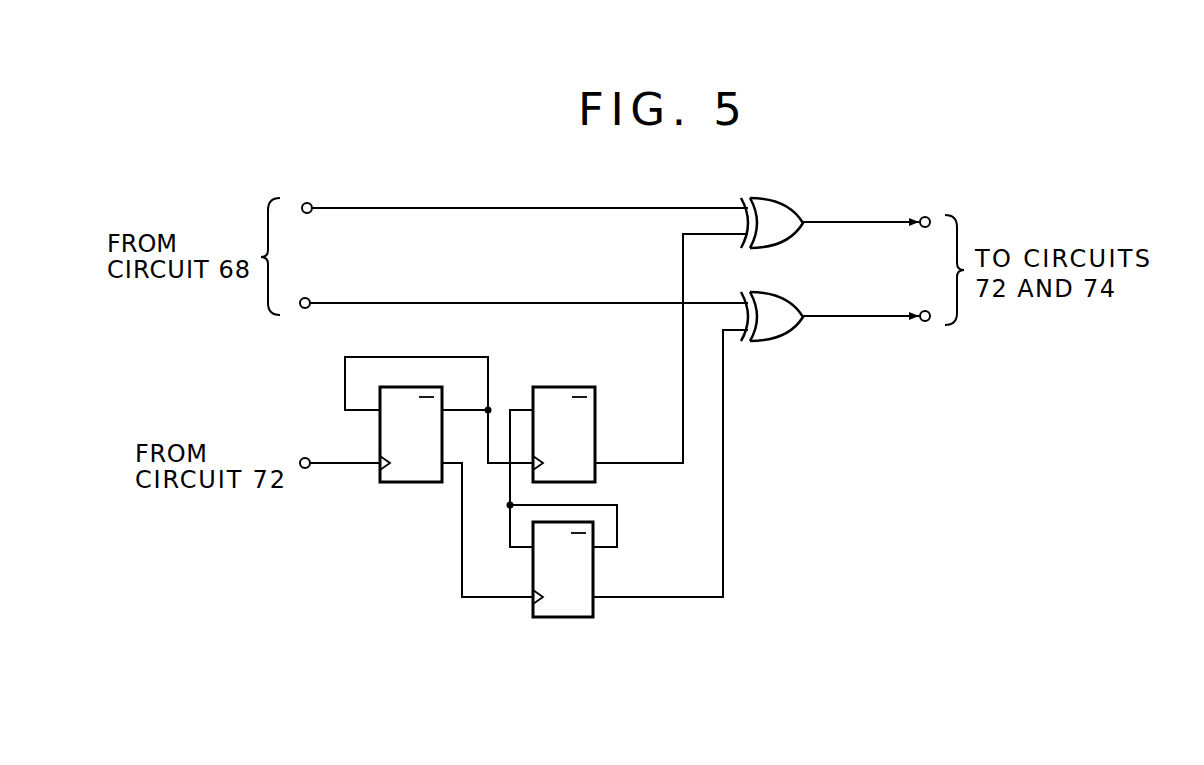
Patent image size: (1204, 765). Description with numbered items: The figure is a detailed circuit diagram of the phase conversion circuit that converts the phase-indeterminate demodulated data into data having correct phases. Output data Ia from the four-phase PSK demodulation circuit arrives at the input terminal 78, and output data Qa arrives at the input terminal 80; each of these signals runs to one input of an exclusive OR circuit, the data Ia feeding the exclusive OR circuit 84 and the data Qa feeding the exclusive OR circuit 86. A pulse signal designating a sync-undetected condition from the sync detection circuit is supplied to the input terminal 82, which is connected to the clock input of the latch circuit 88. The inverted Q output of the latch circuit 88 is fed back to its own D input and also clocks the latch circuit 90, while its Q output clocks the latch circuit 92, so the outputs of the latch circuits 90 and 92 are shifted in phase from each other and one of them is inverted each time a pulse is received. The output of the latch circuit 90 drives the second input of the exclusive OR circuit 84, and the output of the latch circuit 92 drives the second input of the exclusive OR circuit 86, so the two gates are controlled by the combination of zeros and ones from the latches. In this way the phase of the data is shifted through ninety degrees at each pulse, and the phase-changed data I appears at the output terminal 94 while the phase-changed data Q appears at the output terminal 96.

The input terminal 78 is at (307, 198).
The input terminal 80 is at (306, 296).
The input terminal 82 is at (305, 470).
The exclusive OR circuit 84 is at (790, 198).
The exclusive OR circuit 86 is at (790, 303).
The latch circuit 88 is at (415, 486).
The latch circuit 90 is at (590, 387).
The latch circuit 92 is at (580, 620).
The output terminal 94 is at (925, 215).
The output terminal 96 is at (925, 310).